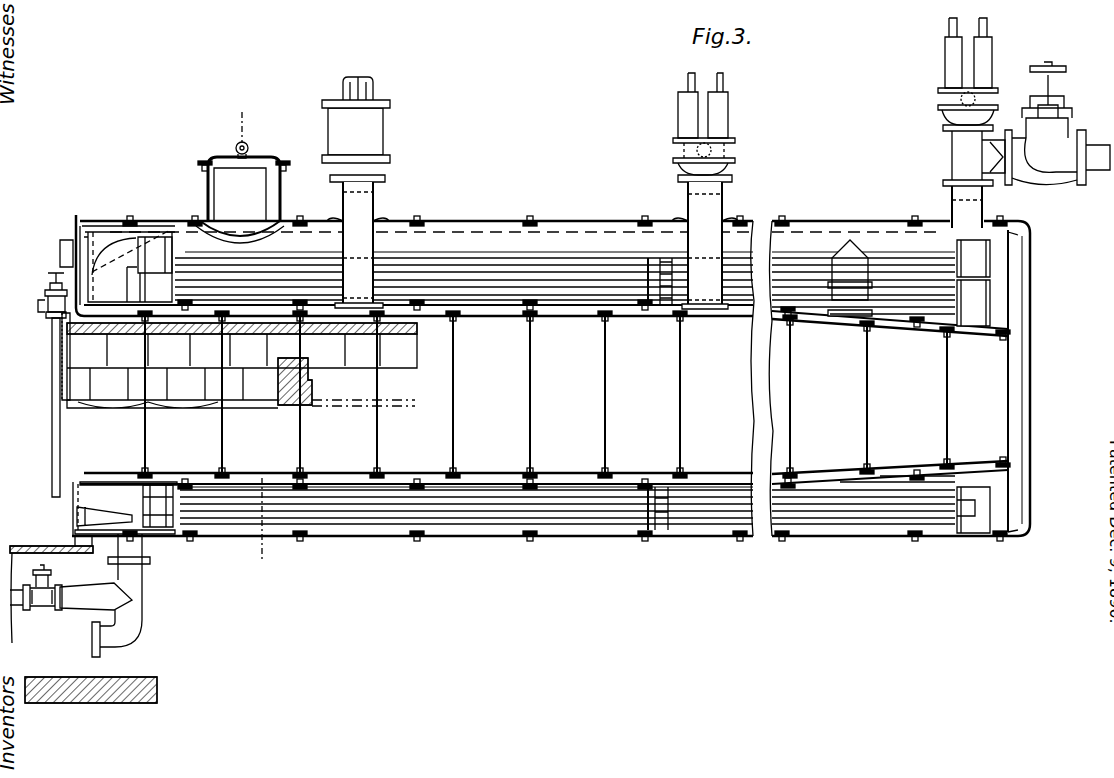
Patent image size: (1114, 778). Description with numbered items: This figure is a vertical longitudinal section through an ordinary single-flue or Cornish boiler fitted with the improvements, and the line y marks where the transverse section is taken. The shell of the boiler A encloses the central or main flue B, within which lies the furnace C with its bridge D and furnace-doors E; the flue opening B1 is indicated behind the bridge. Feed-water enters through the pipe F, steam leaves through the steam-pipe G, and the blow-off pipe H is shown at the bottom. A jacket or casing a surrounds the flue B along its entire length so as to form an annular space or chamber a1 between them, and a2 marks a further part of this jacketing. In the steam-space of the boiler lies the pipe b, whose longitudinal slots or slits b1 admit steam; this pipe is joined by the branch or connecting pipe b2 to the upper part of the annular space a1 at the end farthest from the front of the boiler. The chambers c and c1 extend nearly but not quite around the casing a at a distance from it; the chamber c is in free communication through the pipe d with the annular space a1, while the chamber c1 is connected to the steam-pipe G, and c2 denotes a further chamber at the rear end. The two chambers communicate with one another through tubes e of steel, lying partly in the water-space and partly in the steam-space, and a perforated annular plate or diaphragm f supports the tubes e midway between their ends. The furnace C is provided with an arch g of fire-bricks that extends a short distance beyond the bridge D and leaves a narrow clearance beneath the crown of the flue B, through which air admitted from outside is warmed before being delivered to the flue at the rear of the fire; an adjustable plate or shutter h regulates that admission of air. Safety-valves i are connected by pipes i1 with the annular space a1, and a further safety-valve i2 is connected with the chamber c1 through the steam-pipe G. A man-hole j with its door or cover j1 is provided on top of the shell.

The shell of the boiler A is at (551, 379).
The central or main flue B is at (546, 395).
The flue opening B1 is at (343, 398).
The furnace C is at (242, 371).
The bridge D is at (295, 381).
The furnace-doors E is at (62, 386).
The pipe for supplying feed-water F is at (56, 342).
The steam-pipe G is at (1026, 145).
The blow-off pipe H is at (93, 592).
The jacket or casing a is at (466, 494).
The annular space or chamber a1 is at (476, 316).
The tube support a2 is at (721, 317).
The pipe b is at (570, 244).
The longitudinal slots or slits b1 is at (442, 228).
The branch or connecting pipe b2 is at (850, 278).
The chamber c is at (155, 382).
The chamber c1 is at (973, 406).
The upper end header c2 is at (973, 258).
The pipe d is at (128, 264).
The tubes e is at (565, 391).
The perforated annular plate or diaphragm f is at (644, 284).
The arch g is at (60, 322).
The adjustable plate or shutter h is at (56, 284).
The safety-valves i is at (533, 127).
The pipes i1 is at (532, 245).
The safety-valve i2 is at (961, 74).
The man-hole j is at (243, 200).
The door or cover j1 is at (261, 145).
The section line y is at (252, 335).